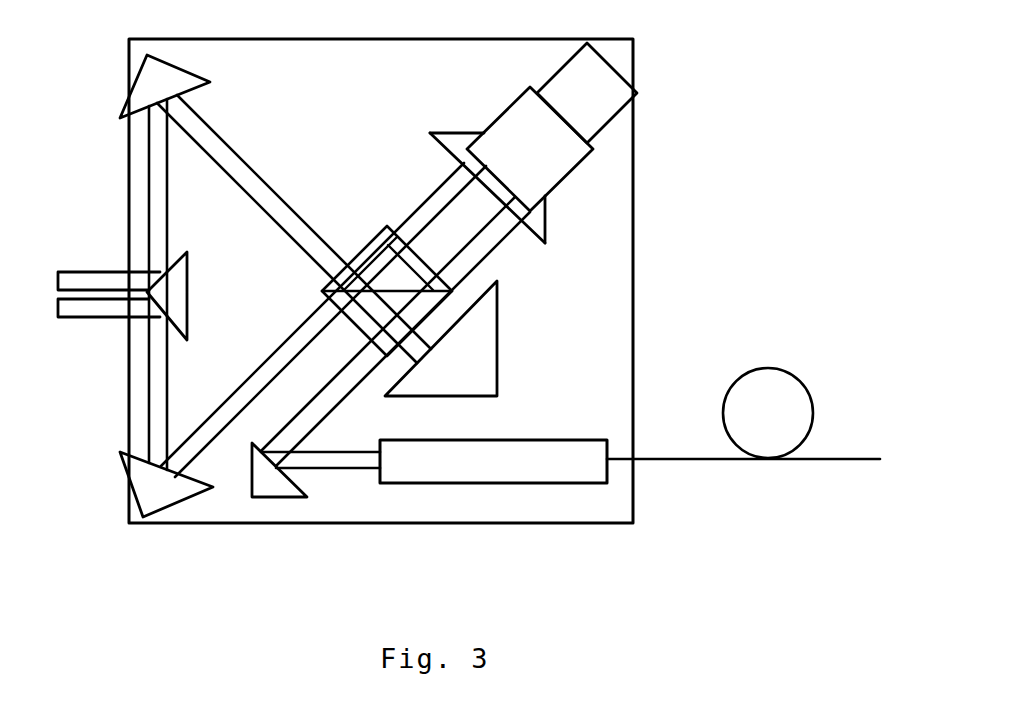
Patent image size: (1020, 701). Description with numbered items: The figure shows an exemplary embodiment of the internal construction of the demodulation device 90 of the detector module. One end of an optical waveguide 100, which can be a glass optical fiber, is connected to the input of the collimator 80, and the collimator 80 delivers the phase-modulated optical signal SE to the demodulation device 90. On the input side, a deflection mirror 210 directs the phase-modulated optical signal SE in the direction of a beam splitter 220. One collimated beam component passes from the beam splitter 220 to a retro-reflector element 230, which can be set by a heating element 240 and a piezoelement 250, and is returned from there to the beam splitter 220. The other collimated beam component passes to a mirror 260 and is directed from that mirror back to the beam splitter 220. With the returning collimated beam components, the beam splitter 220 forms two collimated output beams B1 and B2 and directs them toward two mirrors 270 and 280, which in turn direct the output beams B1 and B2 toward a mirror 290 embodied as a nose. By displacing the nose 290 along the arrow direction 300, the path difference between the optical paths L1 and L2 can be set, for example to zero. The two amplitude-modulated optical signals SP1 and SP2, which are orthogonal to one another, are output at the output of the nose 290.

The collimator 80 is at (493, 461).
The demodulation device 90 is at (360, 136).
The optical waveguide 100 is at (748, 454).
The deflection mirror 210 is at (272, 481).
The beam splitter 220 is at (364, 248).
The retro-reflector element 230 is at (460, 144).
The heating element 240 is at (530, 149).
The piezoelement 250 is at (587, 93).
The mirror 260 is at (441, 338).
The mirror 270 is at (165, 86).
The mirror 280 is at (166, 484).
The mirror embodied as a nose 290 is at (174, 272).
The arrow direction 300 is at (203, 272).
The collimated output beam B1 is at (264, 140).
The collimated output beam B2 is at (244, 358).
The phase-modulated optical signal SE is at (320, 487).
The optical path L1 is at (158, 182).
The optical path L2 is at (158, 347).
The amplitude-modulated optical signal SP1 is at (55, 281).
The amplitude-modulated optical signal SP2 is at (55, 308).